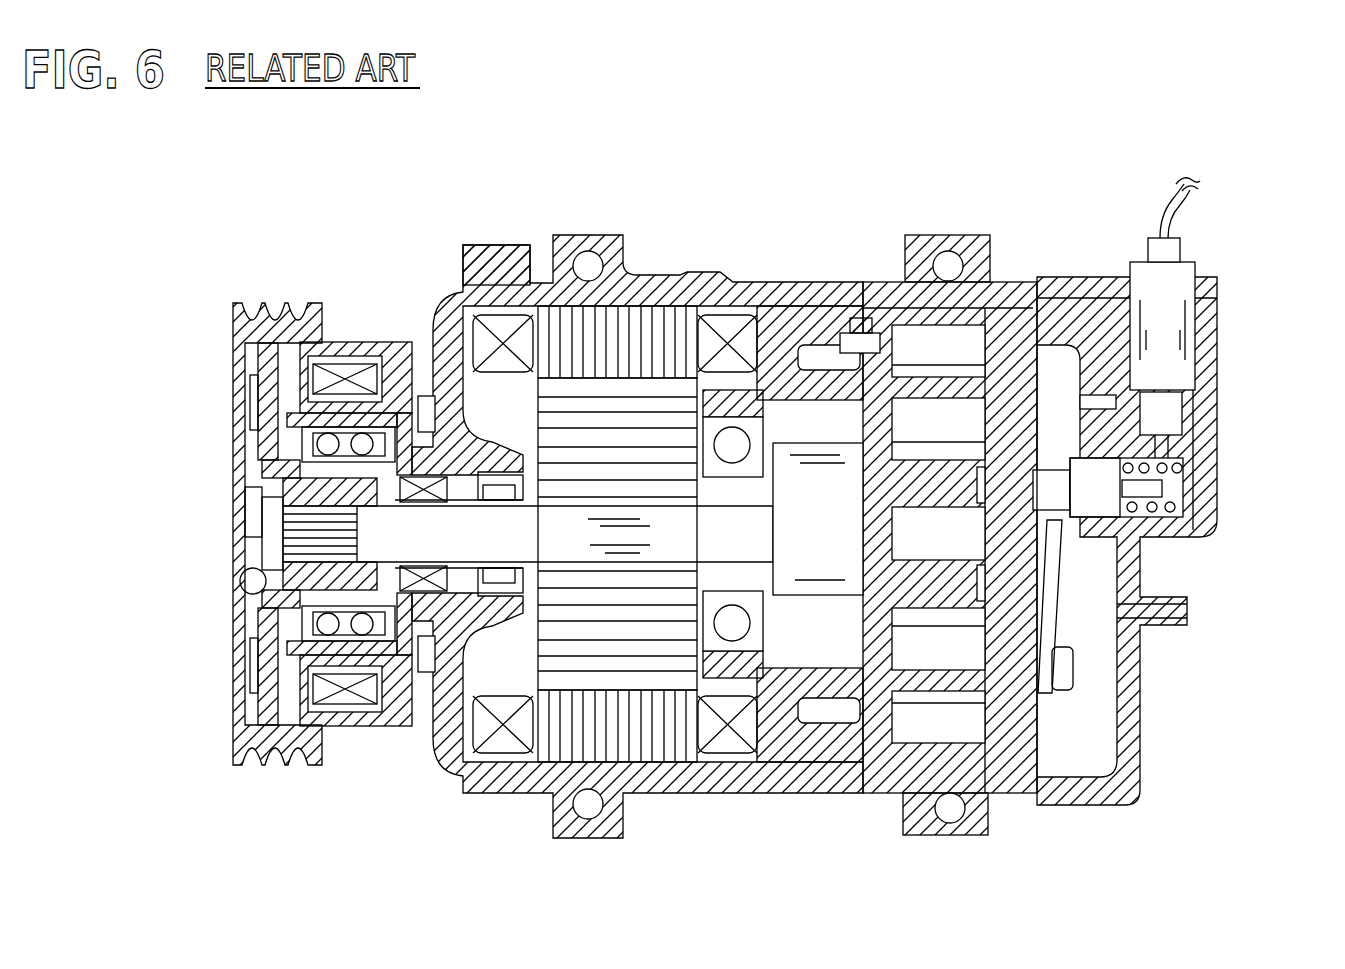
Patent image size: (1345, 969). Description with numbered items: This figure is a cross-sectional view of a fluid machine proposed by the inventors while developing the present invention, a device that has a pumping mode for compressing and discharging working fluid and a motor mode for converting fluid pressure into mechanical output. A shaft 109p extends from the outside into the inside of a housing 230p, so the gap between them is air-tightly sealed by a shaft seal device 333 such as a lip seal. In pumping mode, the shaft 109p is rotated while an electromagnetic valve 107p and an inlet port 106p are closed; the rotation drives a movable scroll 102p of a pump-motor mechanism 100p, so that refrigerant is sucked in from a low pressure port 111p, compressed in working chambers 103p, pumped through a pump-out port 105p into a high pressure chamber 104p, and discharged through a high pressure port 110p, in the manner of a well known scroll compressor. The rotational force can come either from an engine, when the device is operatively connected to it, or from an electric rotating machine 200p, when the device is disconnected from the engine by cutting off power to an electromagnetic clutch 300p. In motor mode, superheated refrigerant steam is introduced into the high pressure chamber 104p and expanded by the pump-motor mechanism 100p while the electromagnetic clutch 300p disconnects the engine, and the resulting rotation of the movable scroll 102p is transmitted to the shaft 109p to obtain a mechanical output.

The electromagnetic clutch 300p is at (352, 335).
The shaft seal device 333 is at (432, 470).
The low pressure port 111p is at (490, 262).
The shaft 109p is at (466, 555).
The housing 230p is at (505, 775).
The electric rotating machine 200p is at (624, 583).
The pump-motor mechanism 100p is at (930, 680).
The movable scroll 102p is at (868, 325).
The working chambers 103p is at (945, 500).
The pump-out port 105p is at (997, 540).
The inlet port 106p is at (1022, 458).
The electromagnetic valve 107p is at (1140, 275).
The high pressure chamber 104p is at (1090, 755).
The high pressure port 110p is at (1172, 604).